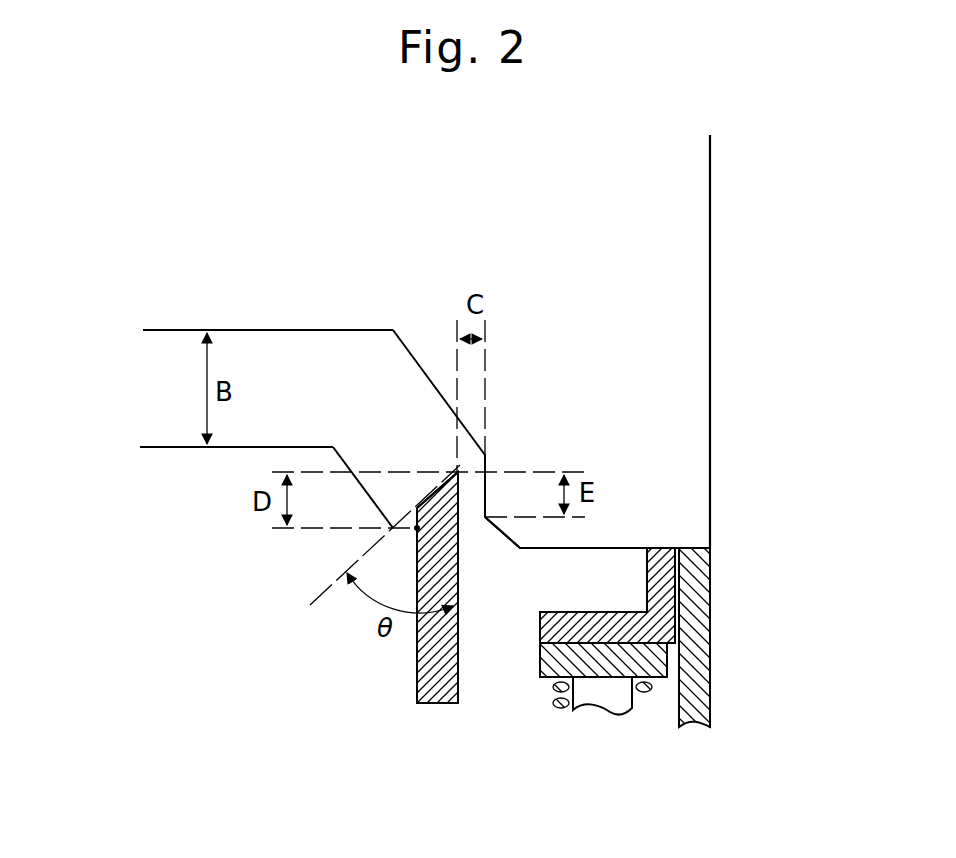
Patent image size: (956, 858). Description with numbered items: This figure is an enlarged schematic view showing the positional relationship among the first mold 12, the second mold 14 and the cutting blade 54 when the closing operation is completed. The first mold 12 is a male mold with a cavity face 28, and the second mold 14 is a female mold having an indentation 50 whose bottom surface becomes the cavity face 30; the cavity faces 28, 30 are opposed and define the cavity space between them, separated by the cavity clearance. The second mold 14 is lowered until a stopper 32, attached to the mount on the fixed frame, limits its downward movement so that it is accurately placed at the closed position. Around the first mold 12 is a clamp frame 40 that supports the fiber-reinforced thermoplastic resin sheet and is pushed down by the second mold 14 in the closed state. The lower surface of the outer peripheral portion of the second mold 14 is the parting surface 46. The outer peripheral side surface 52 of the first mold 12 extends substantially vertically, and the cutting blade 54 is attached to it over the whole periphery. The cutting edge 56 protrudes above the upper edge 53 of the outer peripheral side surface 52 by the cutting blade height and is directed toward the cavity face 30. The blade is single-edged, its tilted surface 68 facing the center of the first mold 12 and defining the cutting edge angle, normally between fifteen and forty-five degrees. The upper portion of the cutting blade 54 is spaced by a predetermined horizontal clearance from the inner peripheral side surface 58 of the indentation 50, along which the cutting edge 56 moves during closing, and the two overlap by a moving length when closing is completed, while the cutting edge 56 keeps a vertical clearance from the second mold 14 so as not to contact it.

The first mold 12 is at (683, 292).
The second mold 14 is at (168, 453).
The cavity face 28 is at (283, 447).
The cavity face 30 is at (322, 333).
The stopper 32 is at (700, 612).
The clamp frame 40 is at (550, 662).
The parting surface 46 is at (610, 555).
The indentation 50 is at (420, 362).
The outer peripheral side surface 52 is at (420, 645).
The upper edge 53 is at (425, 530).
The cutting blade 54 is at (452, 652).
The cutting edge 56 is at (485, 445).
The inner peripheral side surface 58 is at (485, 492).
The tilted surface 68 is at (437, 487).